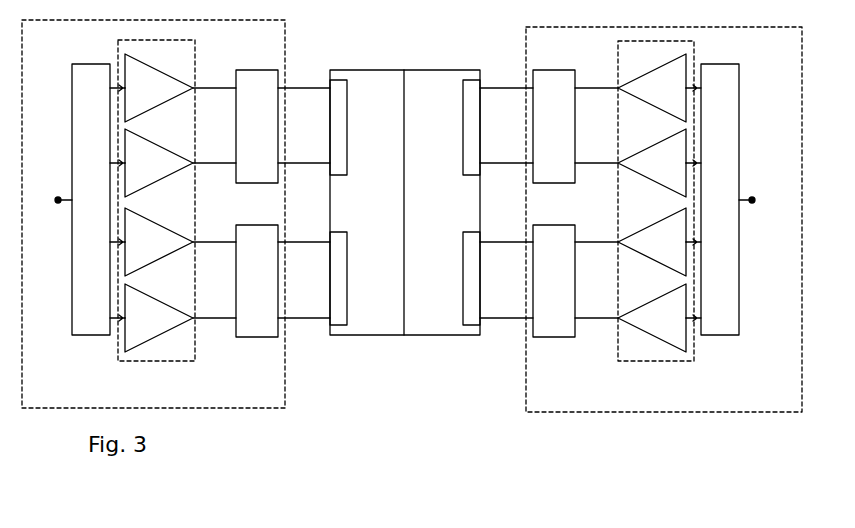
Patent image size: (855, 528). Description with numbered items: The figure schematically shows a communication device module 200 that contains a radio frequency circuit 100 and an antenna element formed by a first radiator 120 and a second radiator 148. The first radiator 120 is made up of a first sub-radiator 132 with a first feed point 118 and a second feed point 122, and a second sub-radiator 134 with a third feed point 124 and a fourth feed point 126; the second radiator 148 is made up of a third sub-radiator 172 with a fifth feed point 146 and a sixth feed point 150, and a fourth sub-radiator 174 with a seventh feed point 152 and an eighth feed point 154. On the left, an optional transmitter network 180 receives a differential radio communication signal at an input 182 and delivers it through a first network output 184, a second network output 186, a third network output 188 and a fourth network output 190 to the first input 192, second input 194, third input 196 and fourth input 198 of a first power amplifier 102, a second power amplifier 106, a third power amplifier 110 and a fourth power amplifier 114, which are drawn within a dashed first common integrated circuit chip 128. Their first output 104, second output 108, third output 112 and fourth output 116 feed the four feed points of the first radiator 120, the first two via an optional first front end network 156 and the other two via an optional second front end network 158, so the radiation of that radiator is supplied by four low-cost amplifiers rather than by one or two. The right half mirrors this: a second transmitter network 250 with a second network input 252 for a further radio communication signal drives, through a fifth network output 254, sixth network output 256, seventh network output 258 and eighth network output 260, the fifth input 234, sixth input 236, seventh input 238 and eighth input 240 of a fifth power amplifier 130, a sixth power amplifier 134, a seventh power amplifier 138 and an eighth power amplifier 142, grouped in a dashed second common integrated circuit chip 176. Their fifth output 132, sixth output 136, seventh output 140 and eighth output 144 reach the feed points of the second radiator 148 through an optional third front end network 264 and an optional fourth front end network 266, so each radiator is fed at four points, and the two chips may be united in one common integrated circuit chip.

The radio frequency circuit 100 is at (526, 400).
The communication device module 200 is at (457, 449).
The first power amplifier 102 is at (162, 95).
The second power amplifier 106 is at (162, 170).
The third power amplifier 110 is at (162, 249).
The fourth power amplifier 114 is at (162, 325).
The first output 104 is at (193, 88).
The second output 108 is at (193, 163).
The third output 112 is at (193, 242).
The fourth output 116 is at (193, 318).
The first feed point 118 is at (330, 88).
The second feed point 122 is at (330, 163).
The third feed point 124 is at (330, 242).
The fourth feed point 126 is at (330, 318).
The first radiator 120 is at (361, 271).
The first common integrated circuit chip 128 is at (188, 361).
The first sub-radiator 132 is at (340, 88).
The second sub-radiator 134 is at (674, 170).
The sixth output 136 is at (618, 163).
The seventh power amplifier 138 is at (674, 249).
The seventh output 140 is at (618, 242).
The eighth power amplifier 142 is at (674, 325).
The eighth output 144 is at (618, 318).
The fifth feed point 146 is at (480, 88).
The second radiator 148 is at (452, 255).
The sixth feed point 150 is at (480, 163).
The seventh feed point 152 is at (480, 242).
The eighth feed point 154 is at (480, 318).
The first front end network 156 is at (270, 135).
The second front end network 158 is at (270, 289).
The third sub-radiator 172 is at (468, 105).
The fourth sub-radiator 174 is at (466, 242).
The second common integrated circuit chip 176 is at (618, 361).
The transmitter network 180 is at (104, 212).
The input 182 is at (57, 197).
The first network output 184 is at (115, 89).
The second network output 186 is at (115, 164).
The third network output 188 is at (115, 243).
The fourth network output 190 is at (115, 318).
The first input 192 is at (125, 88).
The second input 194 is at (125, 163).
The third input 196 is at (125, 242).
The fourth input 198 is at (120, 322).
The fifth power amplifier 130 is at (674, 95).
The second transmitter network 250 is at (733, 212).
The second network input 252 is at (753, 197).
The fifth network output 254 is at (697, 92).
The sixth network output 256 is at (697, 164).
The seventh network output 258 is at (697, 243).
The eighth network output 260 is at (697, 318).
The fifth input 234 is at (686, 88).
The sixth input 236 is at (686, 163).
The seventh input 238 is at (686, 242).
The eighth input 240 is at (696, 322).
The third front end network 264 is at (567, 135).
The fourth front end network 266 is at (567, 289).